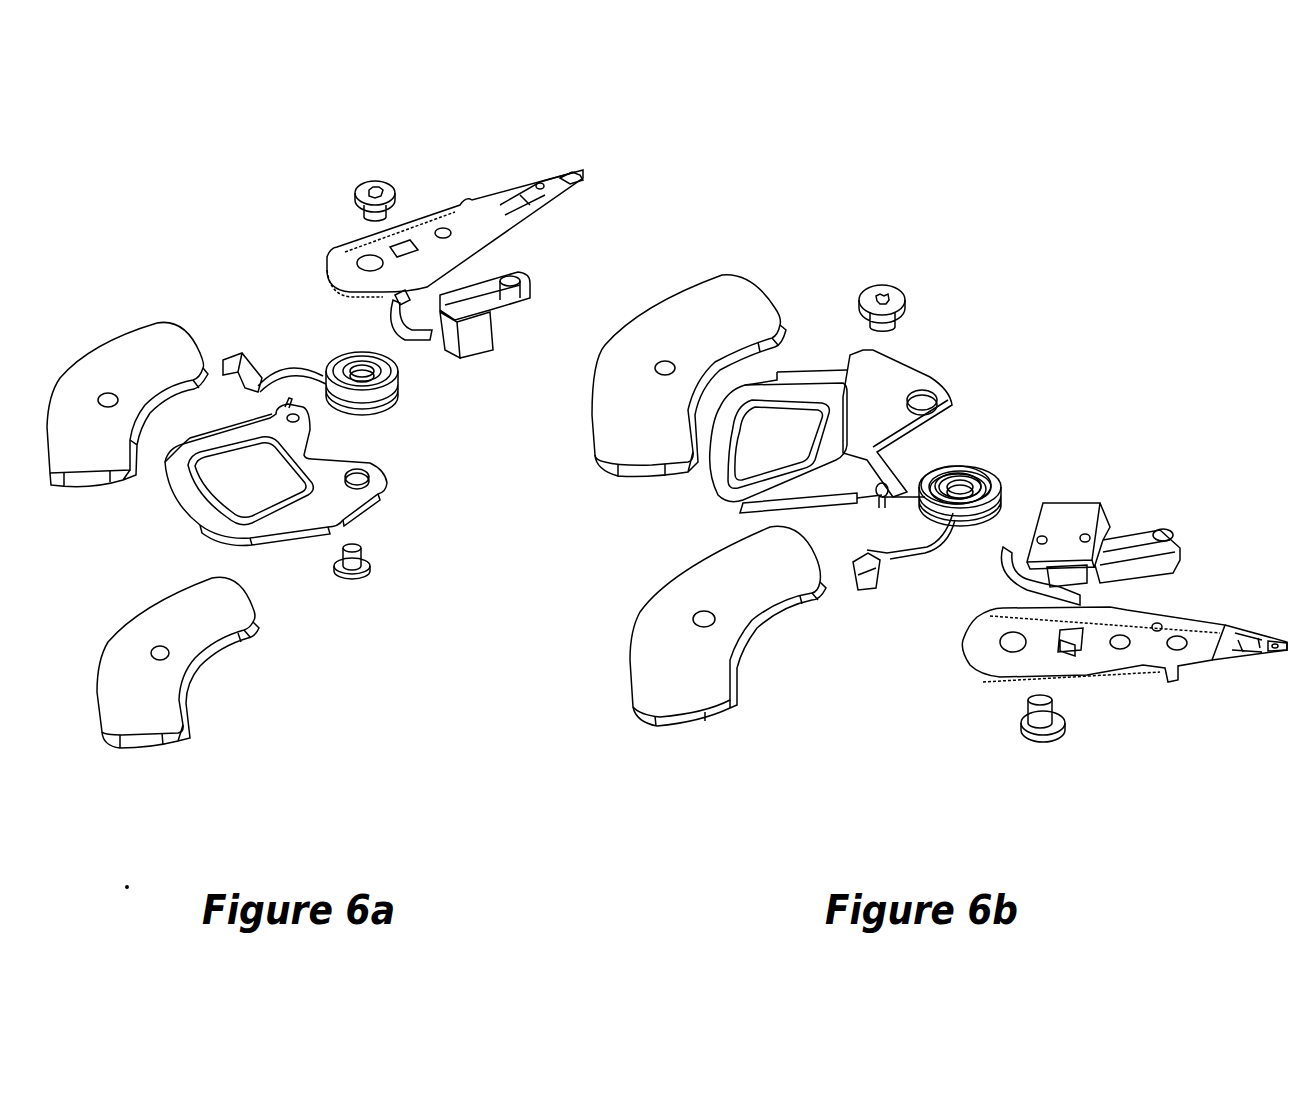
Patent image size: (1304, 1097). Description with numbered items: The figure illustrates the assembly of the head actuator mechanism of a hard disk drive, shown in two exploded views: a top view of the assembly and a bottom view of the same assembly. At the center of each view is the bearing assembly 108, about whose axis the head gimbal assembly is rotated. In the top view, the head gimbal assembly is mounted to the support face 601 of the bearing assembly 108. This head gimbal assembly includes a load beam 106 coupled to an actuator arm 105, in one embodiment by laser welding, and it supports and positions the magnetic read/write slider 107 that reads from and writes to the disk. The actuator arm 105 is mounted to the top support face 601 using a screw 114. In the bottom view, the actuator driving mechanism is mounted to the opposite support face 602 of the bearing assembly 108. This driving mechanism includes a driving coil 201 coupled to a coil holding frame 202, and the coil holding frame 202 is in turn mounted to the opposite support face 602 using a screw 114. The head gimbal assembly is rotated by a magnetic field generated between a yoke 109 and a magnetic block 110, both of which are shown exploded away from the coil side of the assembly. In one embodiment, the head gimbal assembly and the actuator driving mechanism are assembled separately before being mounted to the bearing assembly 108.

In FIG. 6A, the actuator arm 105 is at (431, 222).
In FIG. 6B, the actuator arm 105 is at (988, 652).
In FIG. 6A, the load beam 106 is at (544, 180).
In FIG. 6B, the load beam 106 is at (1241, 663).
In FIG. 6A, the magnetic read/write slider 107 is at (586, 178).
In FIG. 6B, the magnetic read/write slider 107 is at (1279, 640).
In FIG. 6A, the bearing assembly 108 is at (396, 400).
In FIG. 6B, the bearing assembly 108 is at (1012, 493).
In FIG. 6A, the yoke 109 is at (136, 641).
In FIG. 6B, the yoke 109 is at (708, 306).
In FIG. 6A, the magnetic block 110 is at (140, 358).
In FIG. 6B, the magnetic block 110 is at (662, 625).
In FIG. 6A, the screw 114 is at (368, 172).
In FIG. 6B, the screw 114 is at (902, 290).
In FIG. 6A, the driving coil 201 is at (218, 518).
In FIG. 6B, the driving coil 201 is at (720, 480).
In FIG. 6A, the coil holding frame 202 is at (378, 490).
In FIG. 6B, the coil holding frame 202 is at (942, 386).
In FIG. 6A, the support face 601 is at (350, 352).
In FIG. 6B, the opposite support face 602 is at (956, 468).